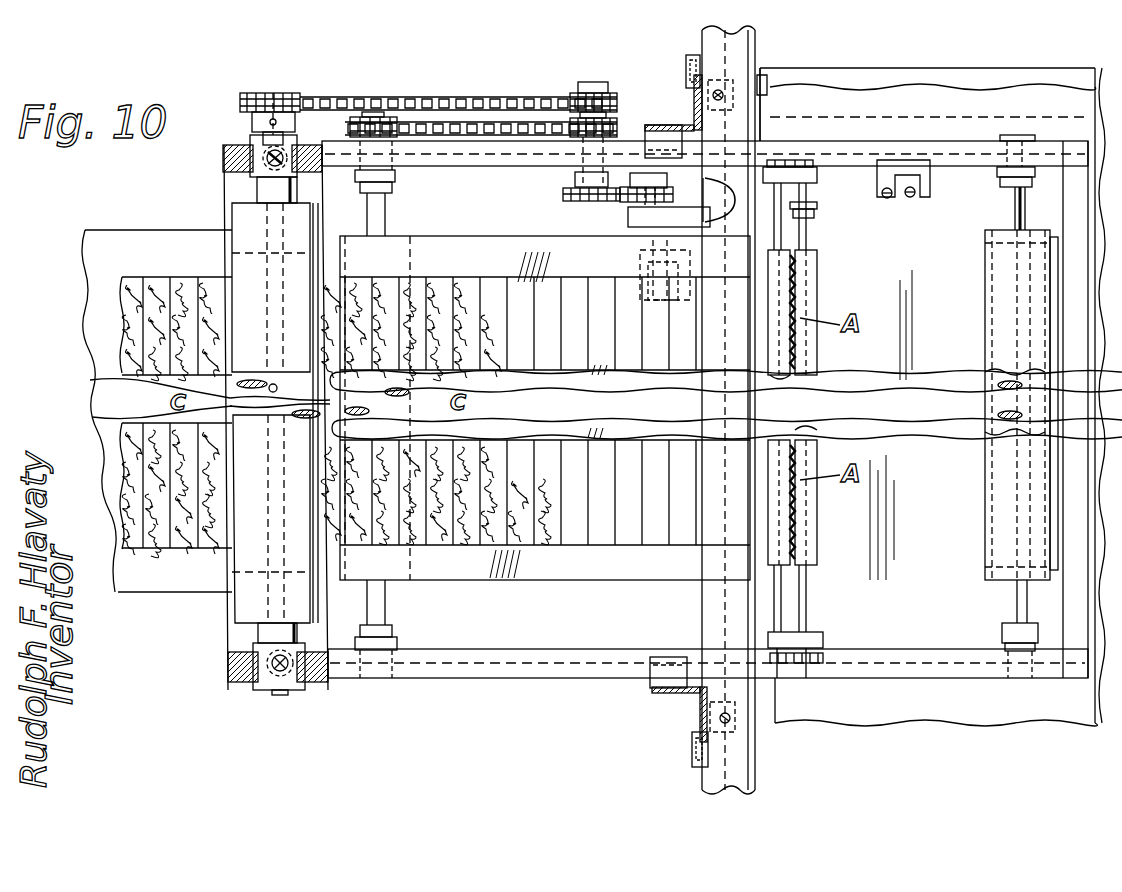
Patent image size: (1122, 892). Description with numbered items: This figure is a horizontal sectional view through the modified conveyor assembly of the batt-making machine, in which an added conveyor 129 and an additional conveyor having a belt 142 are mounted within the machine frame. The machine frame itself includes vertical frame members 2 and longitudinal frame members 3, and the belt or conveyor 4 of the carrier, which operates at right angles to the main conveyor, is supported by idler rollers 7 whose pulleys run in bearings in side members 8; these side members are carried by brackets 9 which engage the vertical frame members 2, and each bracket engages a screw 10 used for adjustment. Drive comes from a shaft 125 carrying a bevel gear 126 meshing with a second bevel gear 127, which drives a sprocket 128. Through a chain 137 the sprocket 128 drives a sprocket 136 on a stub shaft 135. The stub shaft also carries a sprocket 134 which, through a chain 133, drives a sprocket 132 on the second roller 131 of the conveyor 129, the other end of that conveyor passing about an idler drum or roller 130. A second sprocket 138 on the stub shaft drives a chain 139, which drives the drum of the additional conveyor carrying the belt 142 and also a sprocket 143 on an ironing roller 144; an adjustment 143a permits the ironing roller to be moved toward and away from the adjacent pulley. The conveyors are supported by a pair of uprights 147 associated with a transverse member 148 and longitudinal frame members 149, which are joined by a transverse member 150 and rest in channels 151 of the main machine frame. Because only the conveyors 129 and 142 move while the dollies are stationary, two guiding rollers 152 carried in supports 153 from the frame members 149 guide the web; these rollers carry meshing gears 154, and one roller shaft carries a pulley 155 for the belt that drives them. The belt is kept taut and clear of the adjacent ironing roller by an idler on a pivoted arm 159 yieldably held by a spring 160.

The vertical frame members 2 is at (692, 100).
The longitudinal frame members 3 is at (719, 194).
The belt or conveyor 4 is at (832, 95).
The idler rollers 7 is at (938, 80).
The side members 8 is at (757, 50).
The brackets 9 is at (688, 55).
The screw 10 is at (719, 88).
The shaft 125 is at (823, 312).
The bevel gear 126 is at (662, 264).
The second bevel gear 127 is at (655, 278).
The sprocket 128 is at (670, 182).
The added conveyor 129 is at (466, 252).
The idler drum or roller 130 is at (990, 385).
The second roller 131 is at (396, 238).
The sprocket 132 is at (378, 116).
The chain 133 is at (493, 136).
The sprocket 134 is at (614, 126).
The stub shaft 135 is at (590, 82).
The sprocket 136 is at (568, 200).
The chain 137 is at (626, 202).
The second sprocket 138 is at (615, 100).
The chain 139 is at (478, 85).
The belt 142 is at (105, 425).
The sprocket 143 is at (268, 75).
The adjustment 143a is at (265, 154).
The ironing roller 144 is at (240, 217).
The uprights 147 is at (222, 160).
The transverse member 148 is at (233, 186).
The longitudinal frame members 149 is at (536, 160).
The transverse member 150 is at (1085, 600).
The channels 151 is at (678, 108).
The rollers 152 is at (786, 378).
The supports 153 is at (818, 178).
The gears 154 is at (783, 664).
The pulley 155 is at (816, 215).
The pivoted arm 159 is at (887, 198).
The spring 160 is at (912, 195).